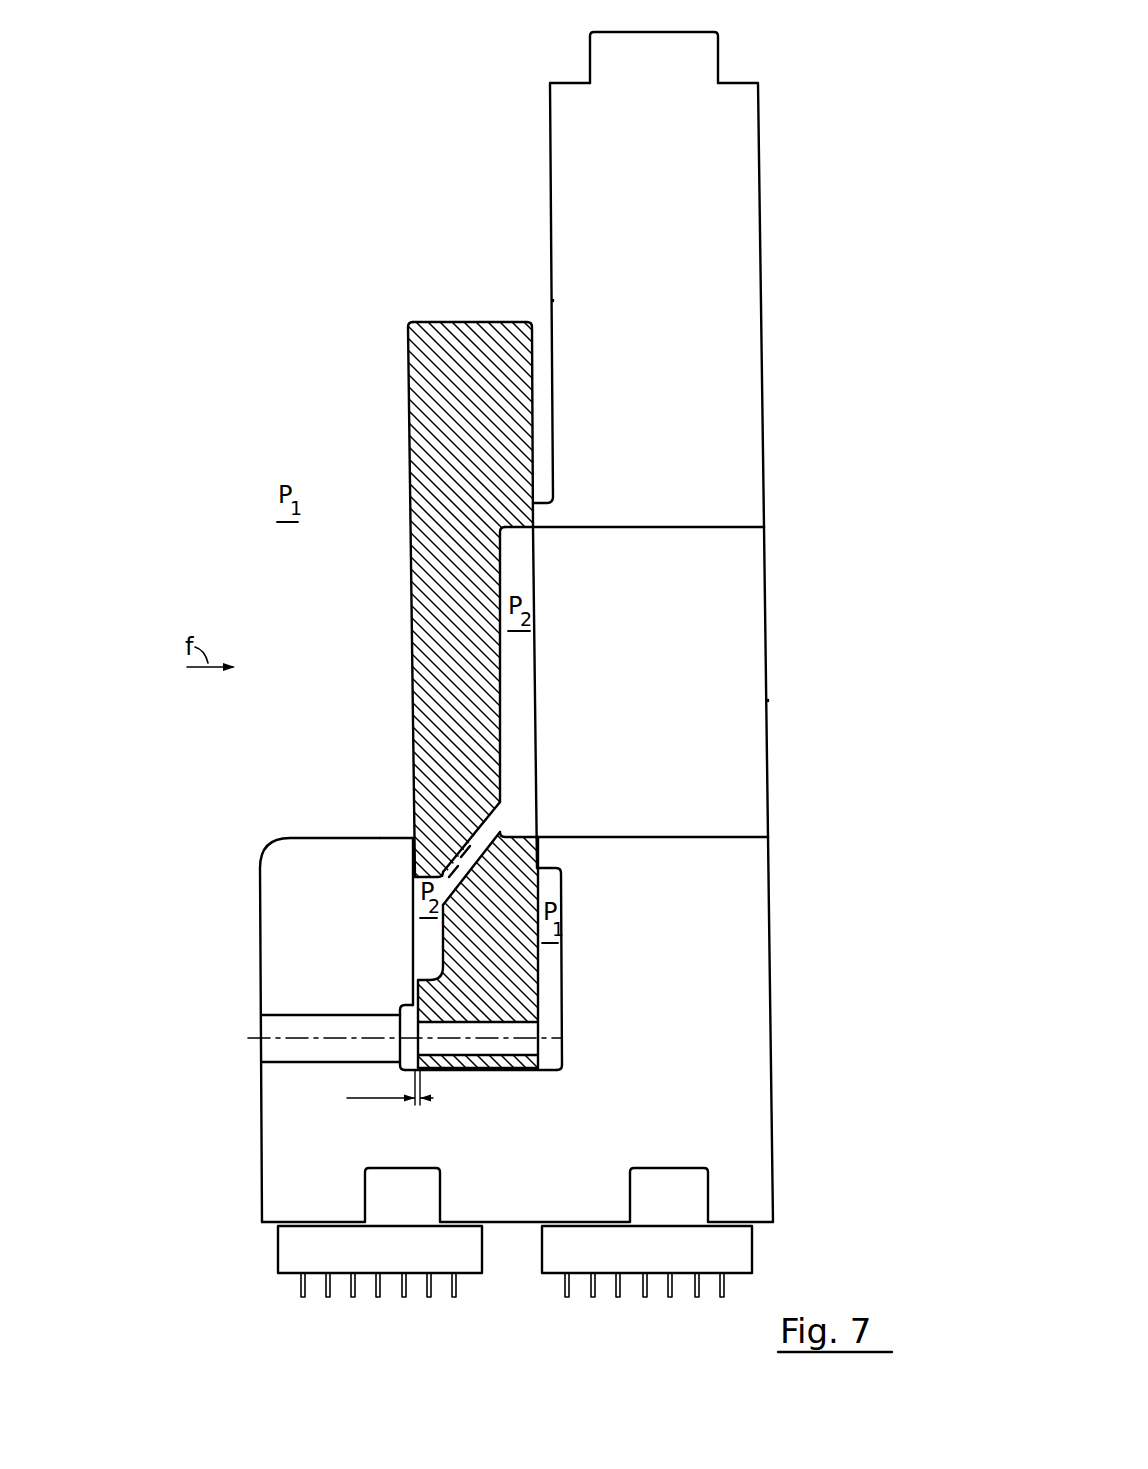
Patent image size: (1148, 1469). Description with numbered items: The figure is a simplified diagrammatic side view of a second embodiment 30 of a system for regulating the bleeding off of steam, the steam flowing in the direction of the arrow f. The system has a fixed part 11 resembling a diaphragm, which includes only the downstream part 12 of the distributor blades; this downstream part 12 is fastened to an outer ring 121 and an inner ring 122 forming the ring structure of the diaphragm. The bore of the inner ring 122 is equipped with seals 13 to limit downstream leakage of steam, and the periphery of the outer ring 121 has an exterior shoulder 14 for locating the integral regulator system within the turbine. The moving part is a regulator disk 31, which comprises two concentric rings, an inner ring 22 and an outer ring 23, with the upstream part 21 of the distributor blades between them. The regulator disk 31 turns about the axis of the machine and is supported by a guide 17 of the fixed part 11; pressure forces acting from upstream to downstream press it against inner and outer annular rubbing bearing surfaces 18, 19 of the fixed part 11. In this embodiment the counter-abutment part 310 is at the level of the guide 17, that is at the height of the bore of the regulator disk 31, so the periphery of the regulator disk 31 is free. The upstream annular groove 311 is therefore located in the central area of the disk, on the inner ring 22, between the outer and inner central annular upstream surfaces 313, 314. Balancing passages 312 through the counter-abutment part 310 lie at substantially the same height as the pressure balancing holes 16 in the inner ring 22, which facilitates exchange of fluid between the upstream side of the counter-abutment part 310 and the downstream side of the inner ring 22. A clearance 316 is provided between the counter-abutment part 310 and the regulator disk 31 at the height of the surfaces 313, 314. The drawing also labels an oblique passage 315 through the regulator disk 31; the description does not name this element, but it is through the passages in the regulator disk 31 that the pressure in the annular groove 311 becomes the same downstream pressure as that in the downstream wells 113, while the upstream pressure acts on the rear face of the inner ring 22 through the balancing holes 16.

The fixed part 11 is at (766, 228).
The downstream part of the distributor blades 12 is at (645, 758).
The seals 13 is at (677, 1243).
The exterior shoulder 14 is at (655, 57).
The pressure balancing holes 16 is at (453, 1037).
The guide 17 is at (473, 1072).
The inner annular rubbing bearing surface 18 is at (543, 513).
The outer annular rubbing bearing surface 19 is at (540, 852).
The upstream part of the distributor blades 21 is at (435, 722).
The inner ring 22 is at (513, 940).
The outer ring 23 is at (475, 431).
The second embodiment 30 is at (292, 397).
The moving regulator disk 31 is at (413, 648).
The downstream wells 113 is at (517, 697).
The outer ring 121 is at (675, 348).
The inner ring 122 is at (657, 1012).
The counter-abutment part 310 is at (293, 883).
The upstream annular groove 311 is at (538, 978).
The balancing passages 312 is at (302, 1050).
The outer central annular upstream surface 313 is at (413, 857).
The inner central annular upstream surface 314 is at (413, 982).
The oblique slot 315 is at (517, 887).
The clearance 316 is at (414, 800).